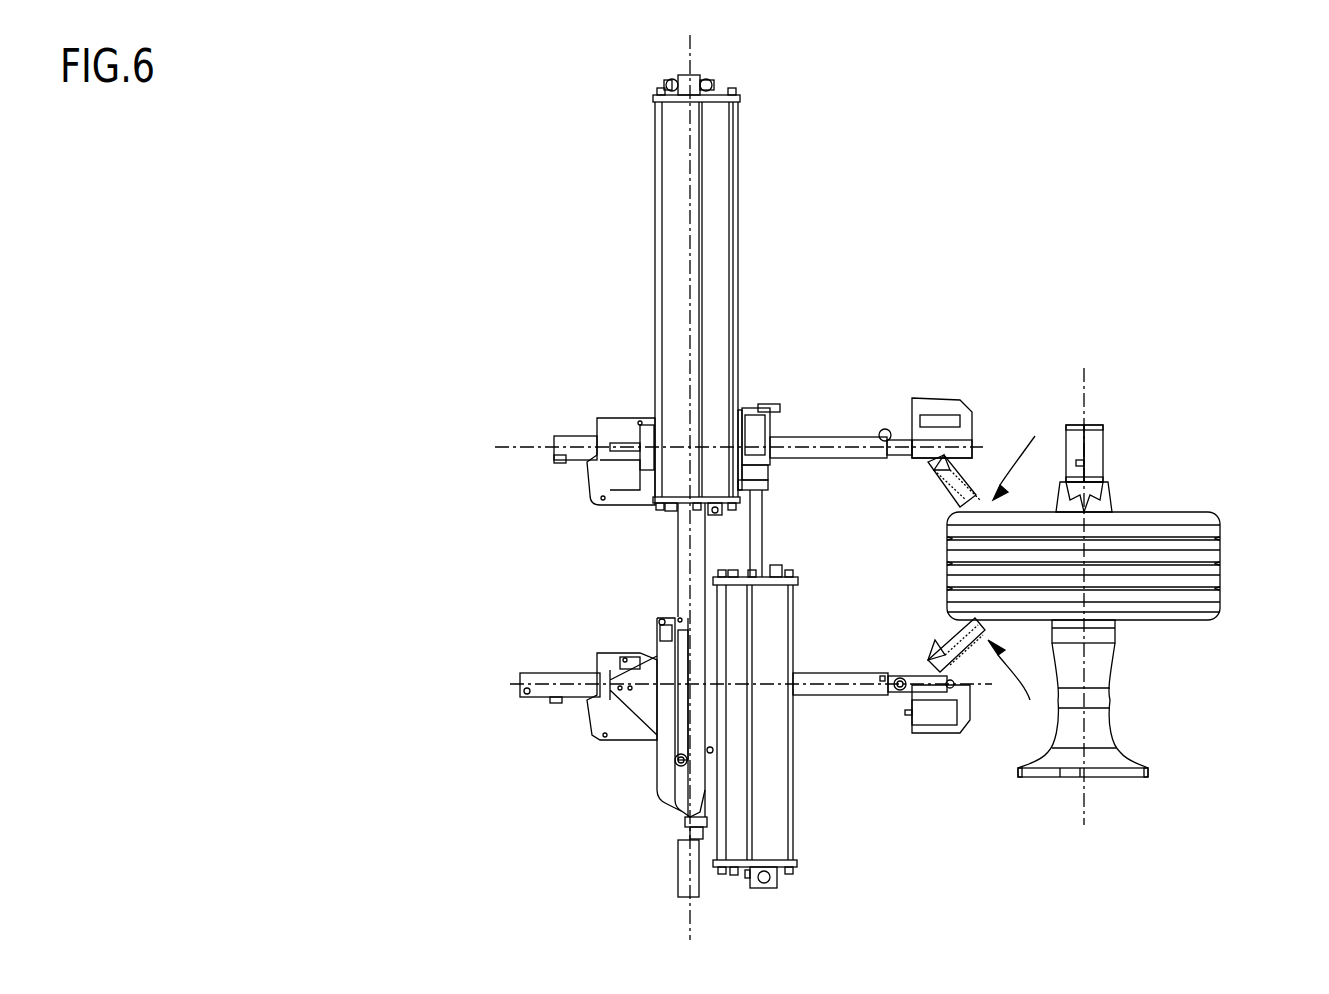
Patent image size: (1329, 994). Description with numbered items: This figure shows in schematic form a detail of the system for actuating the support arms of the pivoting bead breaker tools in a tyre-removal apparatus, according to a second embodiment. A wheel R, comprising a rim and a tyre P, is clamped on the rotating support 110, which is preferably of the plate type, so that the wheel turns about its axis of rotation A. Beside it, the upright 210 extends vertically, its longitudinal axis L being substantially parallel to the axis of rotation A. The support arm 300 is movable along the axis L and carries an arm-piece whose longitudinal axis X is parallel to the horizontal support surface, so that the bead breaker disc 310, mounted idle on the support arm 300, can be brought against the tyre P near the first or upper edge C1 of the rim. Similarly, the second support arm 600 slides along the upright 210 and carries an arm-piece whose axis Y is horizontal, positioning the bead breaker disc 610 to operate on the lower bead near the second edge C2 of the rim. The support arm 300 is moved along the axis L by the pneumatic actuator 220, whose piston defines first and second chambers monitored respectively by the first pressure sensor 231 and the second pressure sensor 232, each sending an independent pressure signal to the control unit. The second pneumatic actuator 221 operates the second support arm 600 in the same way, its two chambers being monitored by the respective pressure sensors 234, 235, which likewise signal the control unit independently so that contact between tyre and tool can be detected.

The support 110 is at (1145, 690).
The upright 210 is at (652, 818).
The pneumatic actuator 220 is at (740, 205).
The second pneumatic actuator 221 is at (800, 835).
The first pressure sensor 231 is at (668, 90).
The second pressure sensor 232 is at (675, 510).
The pressure sensor 234 is at (775, 577).
The pressure sensor 235 is at (776, 888).
The support arm 300 is at (840, 395).
The bead breaker disc 310 is at (900, 500).
The second support arm 600 is at (858, 728).
The bead breaker disc 610 is at (912, 610).
The longitudinal axis L is at (690, 40).
The longitudinal axis X is at (510, 445).
The longitudinal axis Y is at (502, 682).
The axis of rotation A is at (1084, 383).
The wheel R is at (1240, 458).
The tyre P is at (1222, 555).
The first edge C1 is at (1024, 453).
The second edge C2 is at (1018, 680).